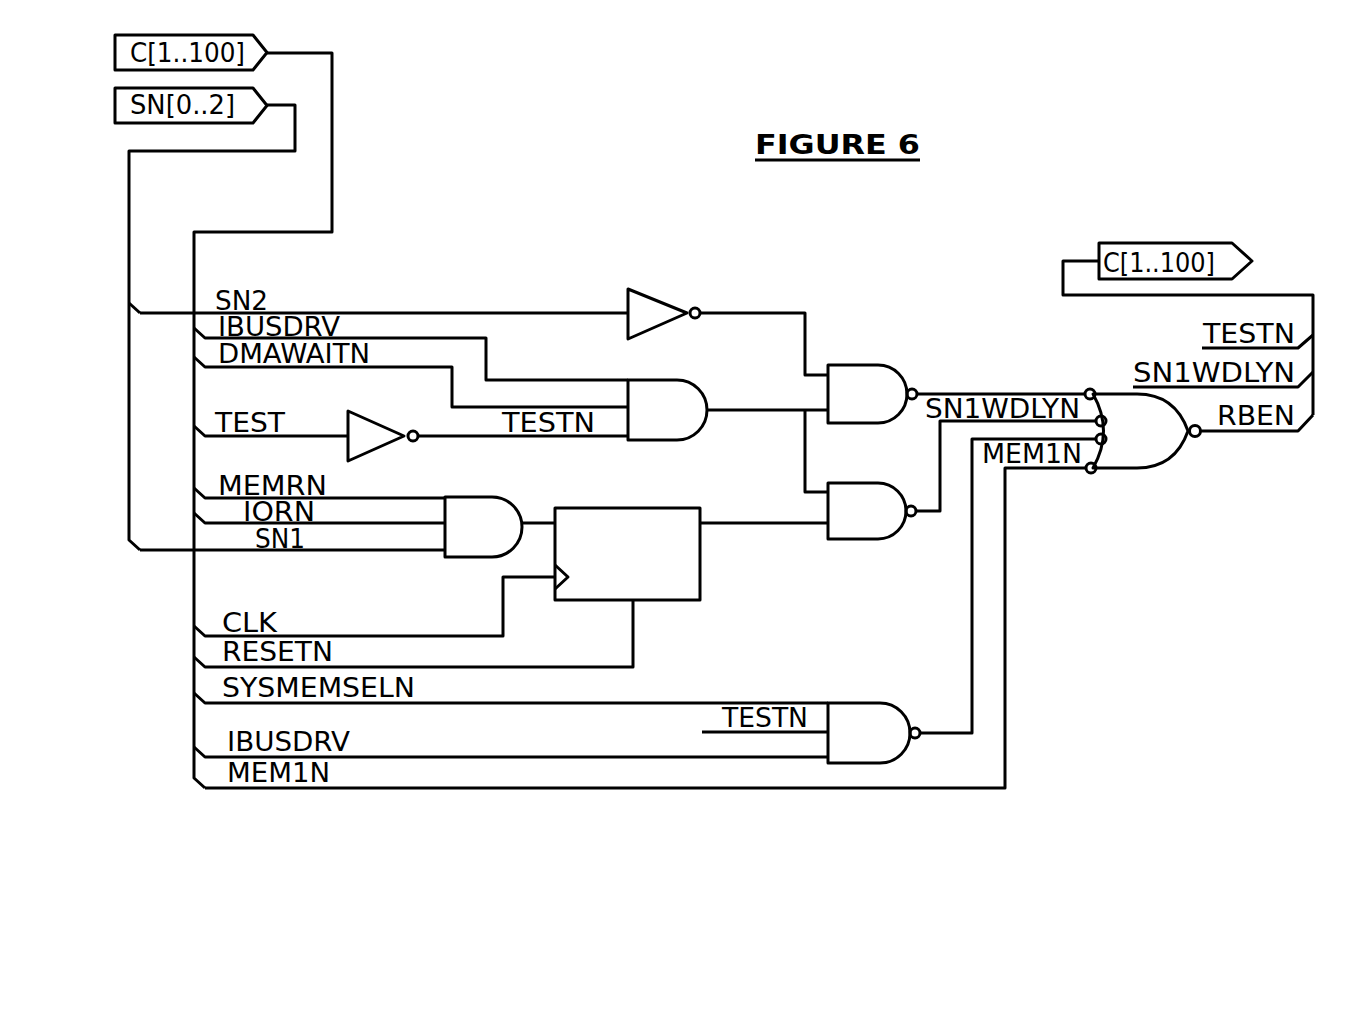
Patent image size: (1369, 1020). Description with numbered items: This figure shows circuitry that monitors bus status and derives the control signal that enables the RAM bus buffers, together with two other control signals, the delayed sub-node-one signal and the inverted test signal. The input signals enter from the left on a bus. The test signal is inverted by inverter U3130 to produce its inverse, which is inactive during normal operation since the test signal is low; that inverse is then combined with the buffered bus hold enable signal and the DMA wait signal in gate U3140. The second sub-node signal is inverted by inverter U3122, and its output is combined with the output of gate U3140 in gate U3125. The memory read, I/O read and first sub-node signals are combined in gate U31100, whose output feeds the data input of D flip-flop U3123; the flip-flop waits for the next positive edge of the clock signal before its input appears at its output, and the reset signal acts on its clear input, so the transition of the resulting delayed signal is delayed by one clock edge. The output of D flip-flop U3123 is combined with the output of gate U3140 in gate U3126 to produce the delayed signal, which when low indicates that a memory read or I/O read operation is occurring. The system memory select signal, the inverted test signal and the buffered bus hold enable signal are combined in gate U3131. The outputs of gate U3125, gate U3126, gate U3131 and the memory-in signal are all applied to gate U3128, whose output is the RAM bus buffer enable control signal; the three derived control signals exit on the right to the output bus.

The inverter U3122 is at (723, 316).
The inverter U3130 is at (481, 420).
The AND gate U3140 is at (688, 387).
The NAND gate U3125 is at (952, 379).
The NAND gate U3126 is at (958, 480).
The AND gate U31100 is at (494, 512).
The D flip-flop U3123 is at (664, 540).
The NAND gate U3131 is at (962, 601).
The NOR gate U3128 is at (1199, 444).